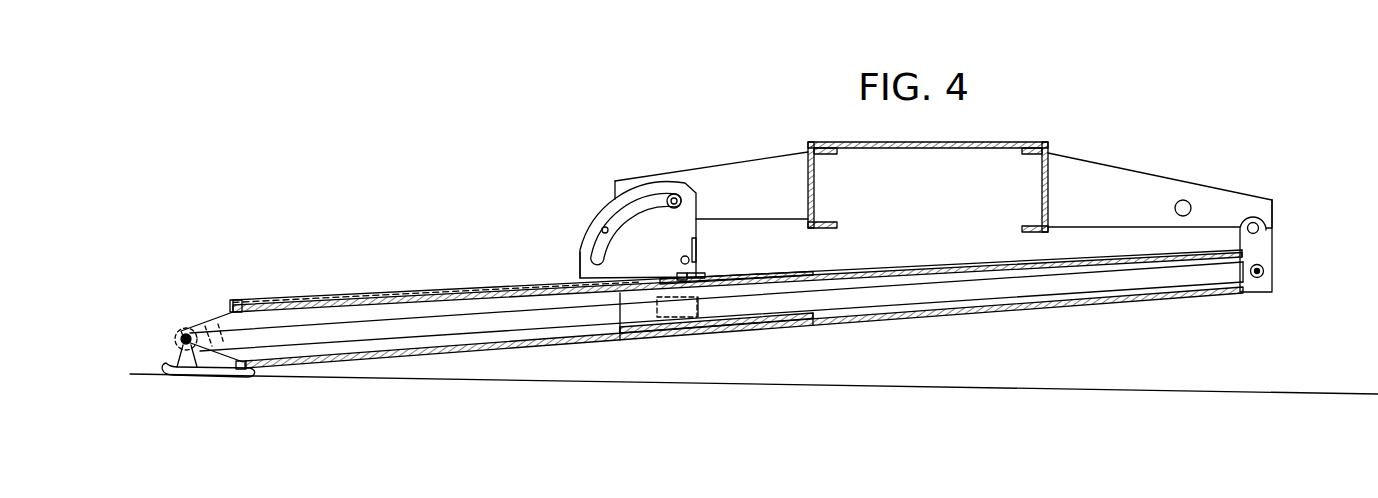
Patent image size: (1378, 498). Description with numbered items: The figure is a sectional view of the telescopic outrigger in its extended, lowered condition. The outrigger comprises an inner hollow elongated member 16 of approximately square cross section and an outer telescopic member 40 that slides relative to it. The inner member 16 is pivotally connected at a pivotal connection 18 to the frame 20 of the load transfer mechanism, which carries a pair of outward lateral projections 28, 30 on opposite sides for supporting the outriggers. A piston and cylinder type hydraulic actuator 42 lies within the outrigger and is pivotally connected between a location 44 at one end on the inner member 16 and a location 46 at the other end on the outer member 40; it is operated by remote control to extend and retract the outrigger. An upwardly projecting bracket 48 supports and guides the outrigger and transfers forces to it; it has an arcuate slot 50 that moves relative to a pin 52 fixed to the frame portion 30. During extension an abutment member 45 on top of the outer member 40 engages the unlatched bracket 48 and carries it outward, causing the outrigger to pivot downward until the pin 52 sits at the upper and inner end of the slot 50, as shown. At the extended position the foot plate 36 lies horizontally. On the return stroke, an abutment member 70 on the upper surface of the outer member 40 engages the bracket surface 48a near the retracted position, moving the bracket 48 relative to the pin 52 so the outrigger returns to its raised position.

The inner hollow elongated member 16 is at (975, 265).
The pivotal connection 18 is at (1267, 223).
The frame 20 is at (938, 194).
The lateral projection 28 is at (1115, 172).
The lateral projection 30 is at (752, 162).
The foot plate 36 is at (180, 366).
The outer telescopic member 40 is at (608, 341).
The hydraulic actuator 42 is at (1148, 277).
The pivotal connection location 44 is at (1265, 271).
The abutment member 45 is at (707, 274).
The pivotal connection location 46 is at (183, 334).
The bracket 48 is at (610, 207).
The surface 48a is at (573, 266).
The slot 50 is at (603, 228).
The pin 52 is at (673, 195).
The abutment member 70 is at (235, 299).